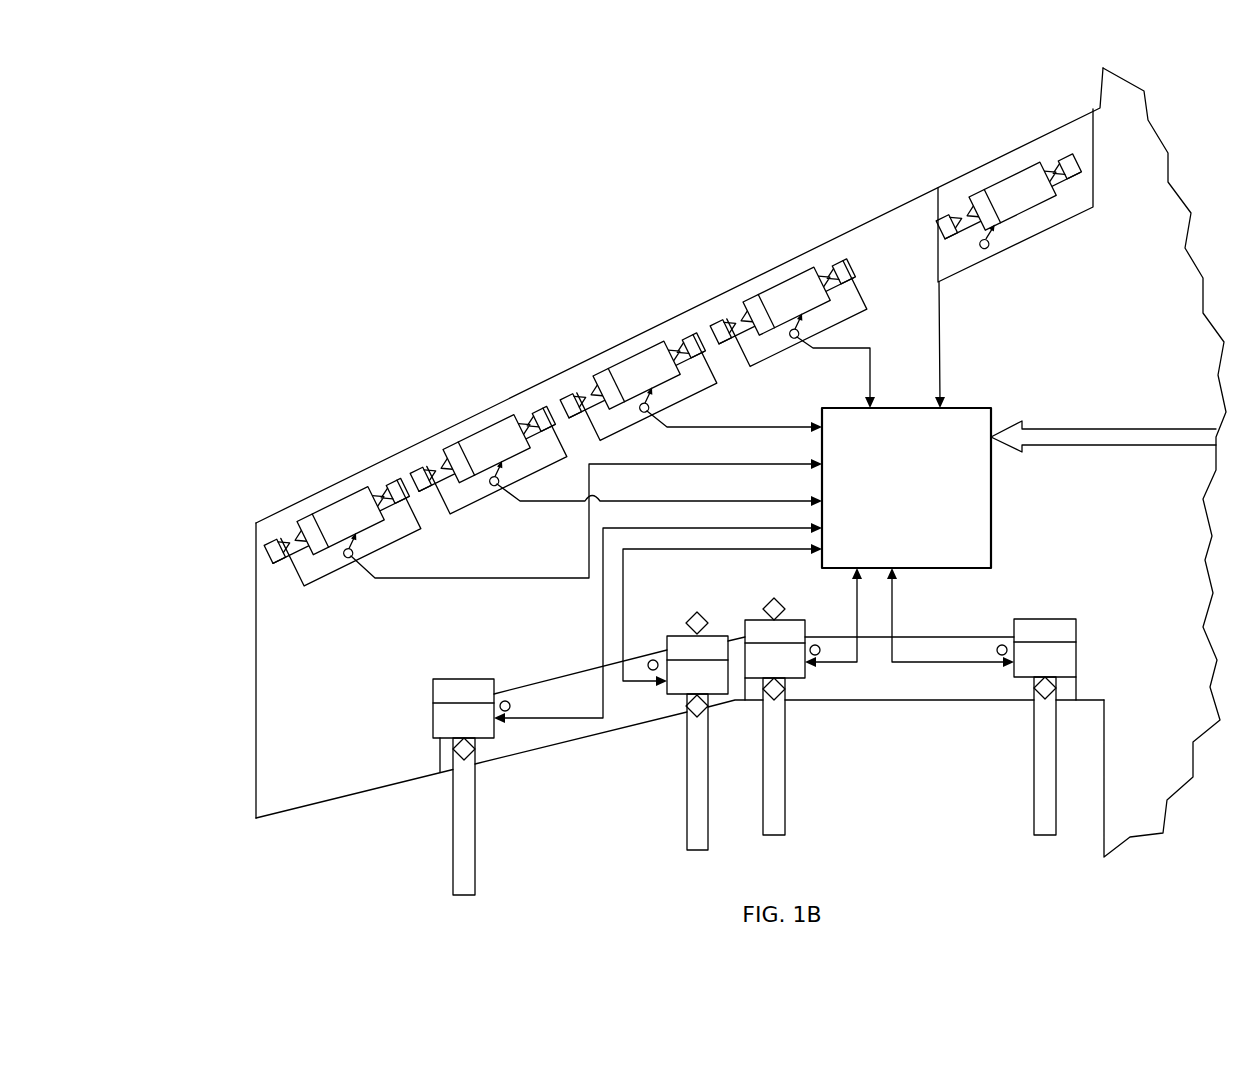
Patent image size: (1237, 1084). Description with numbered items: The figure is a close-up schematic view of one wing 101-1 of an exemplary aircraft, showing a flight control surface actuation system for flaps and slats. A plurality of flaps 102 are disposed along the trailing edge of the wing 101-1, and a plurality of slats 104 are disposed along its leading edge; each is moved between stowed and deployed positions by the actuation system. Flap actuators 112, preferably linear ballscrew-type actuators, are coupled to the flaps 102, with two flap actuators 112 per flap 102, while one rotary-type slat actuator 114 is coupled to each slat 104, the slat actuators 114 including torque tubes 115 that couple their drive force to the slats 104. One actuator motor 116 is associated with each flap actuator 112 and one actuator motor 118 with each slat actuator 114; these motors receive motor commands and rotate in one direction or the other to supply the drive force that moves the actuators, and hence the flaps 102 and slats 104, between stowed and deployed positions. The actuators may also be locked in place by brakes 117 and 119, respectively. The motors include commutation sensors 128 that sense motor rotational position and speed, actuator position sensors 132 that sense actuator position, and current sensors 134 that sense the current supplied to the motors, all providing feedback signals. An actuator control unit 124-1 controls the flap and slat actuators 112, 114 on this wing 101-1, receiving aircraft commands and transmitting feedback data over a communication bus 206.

The wing 101-1 is at (256, 732).
The flap 102 is at (568, 740).
The slat 104 is at (308, 499).
The flap actuator 112 is at (418, 738).
The slat actuator 114 is at (311, 433).
The torque tube 115 is at (268, 540).
The actuator motor 116 is at (432, 705).
The brake 117 is at (463, 679).
The actuator motor 118 is at (676, 358).
The brake 119 is at (320, 555).
The actuator control unit 124-1 is at (991, 500).
The commutation sensor 128 is at (378, 490).
The actuator position sensor 132 is at (288, 556).
The current sensor 134 is at (352, 558).
The communication bus 206 is at (1136, 446).